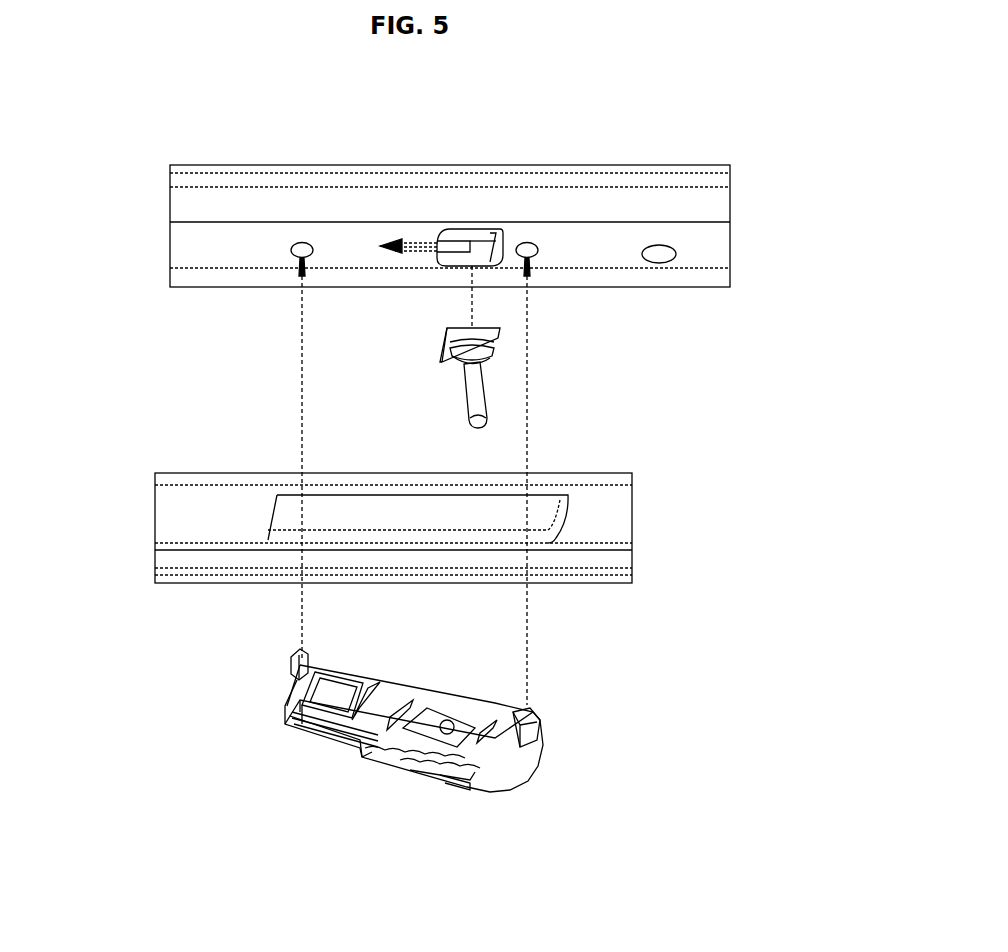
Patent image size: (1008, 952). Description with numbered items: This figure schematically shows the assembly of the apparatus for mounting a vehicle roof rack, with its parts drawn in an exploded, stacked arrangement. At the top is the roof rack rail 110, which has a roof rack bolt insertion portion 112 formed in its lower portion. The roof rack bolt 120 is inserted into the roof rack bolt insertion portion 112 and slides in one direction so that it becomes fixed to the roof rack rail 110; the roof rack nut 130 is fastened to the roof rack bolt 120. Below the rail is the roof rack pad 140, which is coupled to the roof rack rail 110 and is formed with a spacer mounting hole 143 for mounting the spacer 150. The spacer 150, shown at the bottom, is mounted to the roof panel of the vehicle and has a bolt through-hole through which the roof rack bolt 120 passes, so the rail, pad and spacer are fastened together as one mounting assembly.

The roof rack rail 110 is at (677, 210).
The roof rack bolt insertion portion 112 is at (462, 232).
The roof rack bolt 120 is at (445, 345).
The roof rack nut 130 is at (455, 372).
The roof rack pad 140 is at (600, 515).
The spacer mounting hole 143 is at (283, 516).
The spacer 150 is at (522, 765).